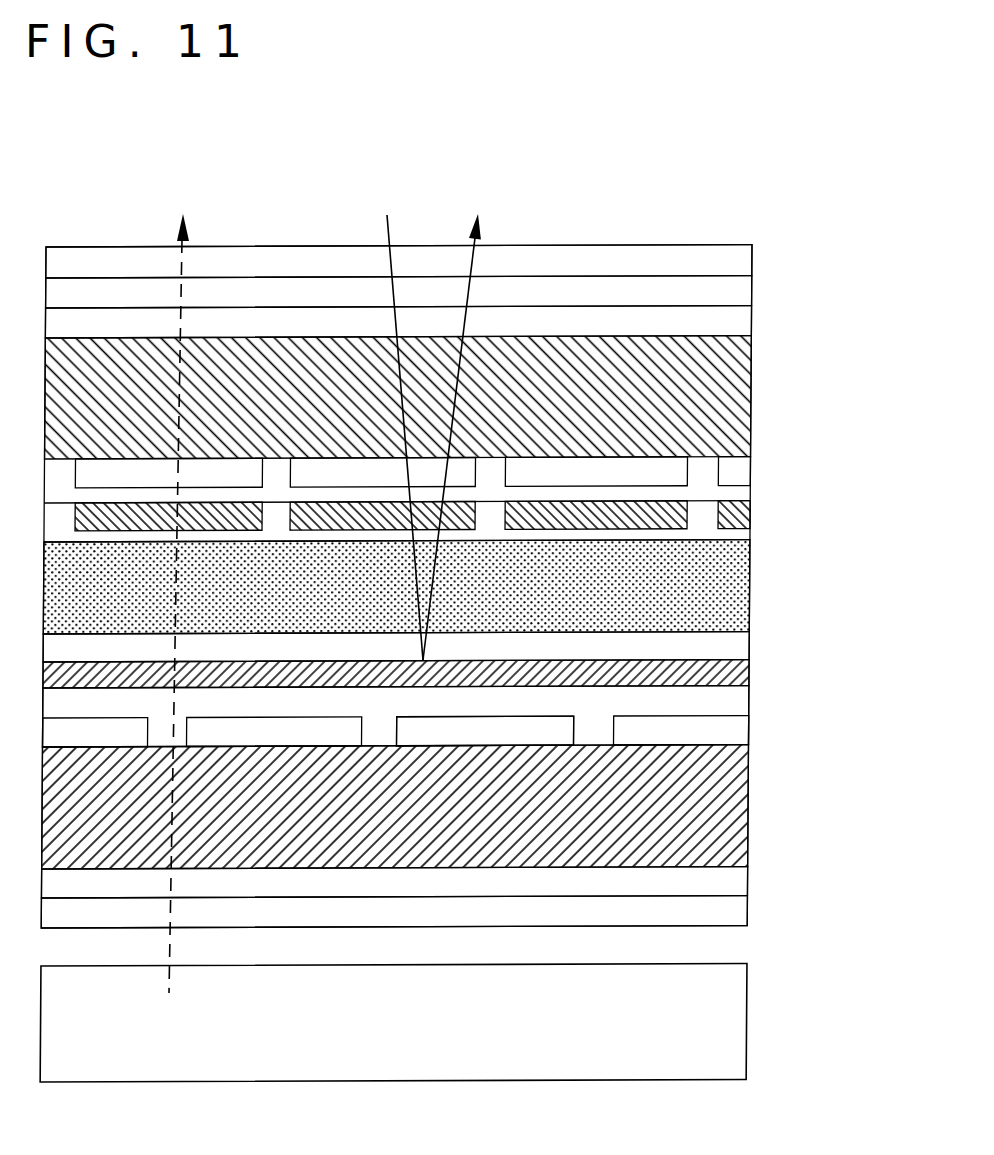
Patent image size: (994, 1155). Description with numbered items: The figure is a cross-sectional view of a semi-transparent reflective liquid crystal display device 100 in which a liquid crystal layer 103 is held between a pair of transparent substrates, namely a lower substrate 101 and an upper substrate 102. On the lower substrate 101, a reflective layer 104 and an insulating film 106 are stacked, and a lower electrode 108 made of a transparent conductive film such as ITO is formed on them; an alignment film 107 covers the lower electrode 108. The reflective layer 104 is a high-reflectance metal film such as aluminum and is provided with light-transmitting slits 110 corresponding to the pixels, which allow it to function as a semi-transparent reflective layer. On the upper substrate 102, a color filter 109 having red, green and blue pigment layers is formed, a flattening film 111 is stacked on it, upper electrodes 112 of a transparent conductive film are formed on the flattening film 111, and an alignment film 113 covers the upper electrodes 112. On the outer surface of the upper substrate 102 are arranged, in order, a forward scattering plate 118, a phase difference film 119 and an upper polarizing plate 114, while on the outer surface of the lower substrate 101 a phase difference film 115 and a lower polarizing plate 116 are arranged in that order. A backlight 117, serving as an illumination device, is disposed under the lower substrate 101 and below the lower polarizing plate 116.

The liquid crystal display device 100 is at (426, 230).
The lower substrate 101 is at (747, 810).
The upper substrate 102 is at (750, 383).
The liquid crystal layer 103 is at (747, 580).
The reflective layer 104 is at (740, 732).
The insulating film 106 is at (740, 703).
The alignment film 107 is at (740, 647).
The lower electrode 108 is at (745, 678).
The color filter 109 is at (750, 468).
The light-transmitting slit 110 is at (574, 733).
The flattening film 111 is at (750, 492).
The upper electrode 112 is at (750, 520).
The alignment film 113 is at (750, 537).
The upper polarizing plate 114 is at (750, 261).
The phase difference film 115 is at (737, 881).
The lower polarizing plate 116 is at (737, 912).
The backlight 117 is at (735, 1013).
The forward scattering plate 118 is at (750, 325).
The phase difference film 119 is at (750, 295).